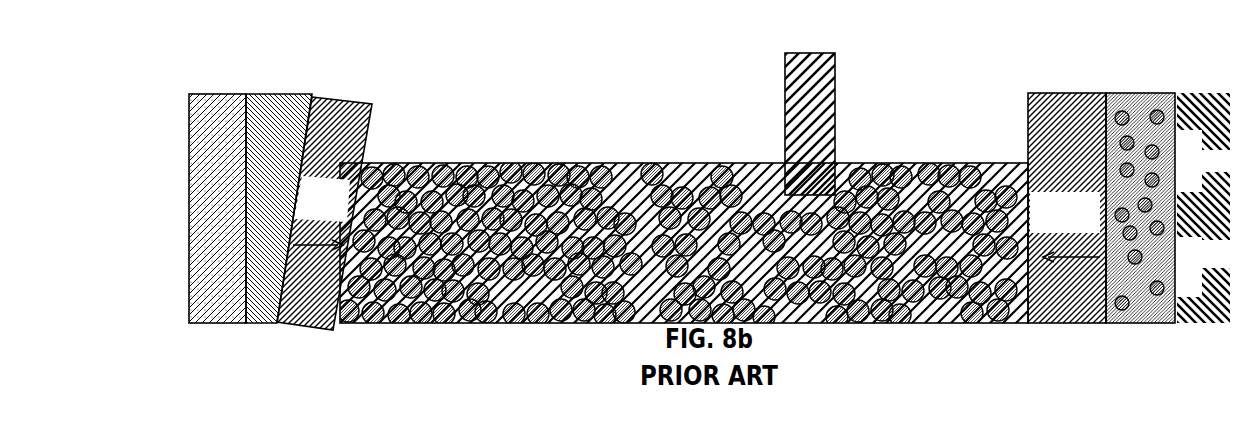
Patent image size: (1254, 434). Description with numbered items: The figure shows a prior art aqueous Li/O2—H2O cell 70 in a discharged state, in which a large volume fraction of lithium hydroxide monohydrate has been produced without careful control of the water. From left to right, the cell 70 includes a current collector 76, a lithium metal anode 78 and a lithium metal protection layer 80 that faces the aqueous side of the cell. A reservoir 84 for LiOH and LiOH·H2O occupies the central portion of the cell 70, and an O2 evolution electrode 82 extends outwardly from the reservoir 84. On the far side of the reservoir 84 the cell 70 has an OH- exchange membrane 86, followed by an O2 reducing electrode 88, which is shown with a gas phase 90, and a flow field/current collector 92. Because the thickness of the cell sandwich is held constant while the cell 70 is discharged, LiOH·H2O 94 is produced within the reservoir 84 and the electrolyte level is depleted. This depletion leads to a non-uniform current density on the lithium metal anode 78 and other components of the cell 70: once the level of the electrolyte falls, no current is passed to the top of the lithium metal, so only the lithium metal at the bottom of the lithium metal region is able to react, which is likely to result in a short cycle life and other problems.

The aqueous Li/O2—H2O cell 70 is at (498, 62).
The current collector 76 is at (213, 94).
The lithium metal anode 78 is at (283, 94).
The lithium metal protection layer 80 is at (363, 103).
The O2 evolution electrode 82 is at (787, 80).
The reservoir 84 is at (630, 163).
The OH- exchange membrane 86 is at (1058, 93).
The O2 reducing electrode 88 is at (1160, 93).
The gas phase 90 is at (1118, 93).
The flow field/current collector 92 is at (1222, 93).
The LiOH·H2O 94 is at (528, 163).